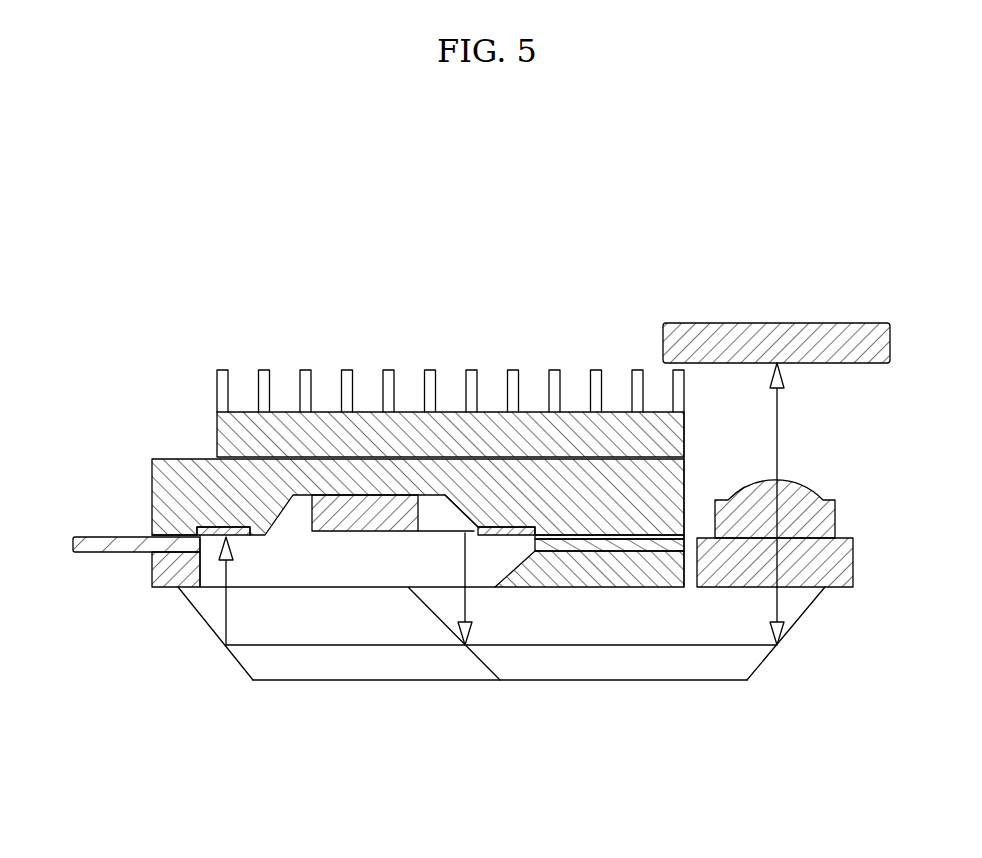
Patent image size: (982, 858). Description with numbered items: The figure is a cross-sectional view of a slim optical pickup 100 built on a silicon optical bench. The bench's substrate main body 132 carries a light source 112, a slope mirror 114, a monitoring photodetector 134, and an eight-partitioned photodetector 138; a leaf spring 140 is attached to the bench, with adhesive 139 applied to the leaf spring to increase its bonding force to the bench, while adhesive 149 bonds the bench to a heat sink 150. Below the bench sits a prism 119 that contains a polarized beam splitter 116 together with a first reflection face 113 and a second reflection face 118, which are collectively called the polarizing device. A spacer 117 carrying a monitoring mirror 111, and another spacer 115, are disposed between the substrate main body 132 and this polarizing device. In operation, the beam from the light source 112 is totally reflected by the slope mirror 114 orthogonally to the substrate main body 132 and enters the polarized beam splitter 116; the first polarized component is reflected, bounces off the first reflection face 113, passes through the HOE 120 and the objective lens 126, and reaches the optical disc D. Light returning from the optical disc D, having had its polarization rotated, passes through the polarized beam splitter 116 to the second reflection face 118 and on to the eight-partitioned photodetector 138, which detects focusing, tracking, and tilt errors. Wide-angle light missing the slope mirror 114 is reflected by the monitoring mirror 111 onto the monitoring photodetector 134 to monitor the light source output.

The slim optical pickup 100 is at (148, 369).
The monitoring mirror 111 is at (513, 587).
The light source 112 is at (370, 507).
The first reflection face 113 is at (762, 663).
The slope mirror 114 is at (462, 500).
The spacer 115 is at (160, 570).
The polarized beam splitter 116 is at (480, 670).
The spacer 117 is at (605, 568).
The second reflection face 118 is at (235, 663).
The prism 119 is at (717, 663).
The HOE 120 is at (840, 558).
The objective lens 126 is at (820, 512).
The substrate main body 132 is at (163, 482).
The monitoring photodetector 134 is at (505, 527).
The eight-partitioned photodetector 138 is at (175, 530).
The adhesive 139 is at (152, 532).
The leaf spring 140 is at (73, 543).
The adhesive 149 is at (284, 457).
The heat sink 150 is at (230, 430).
The optical disc D is at (663, 340).